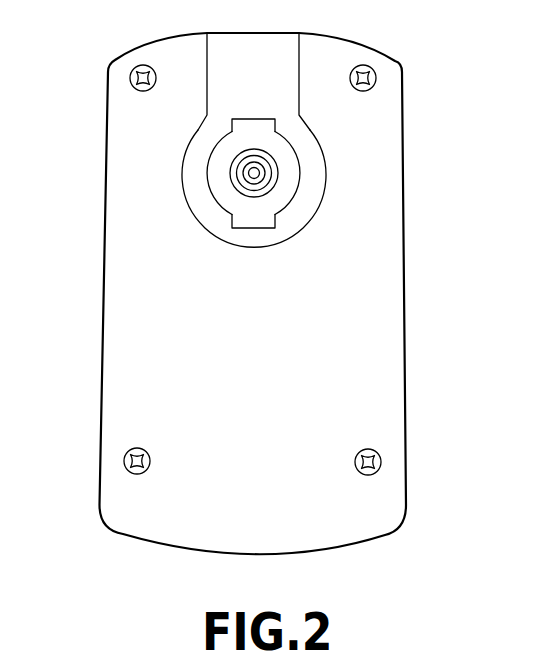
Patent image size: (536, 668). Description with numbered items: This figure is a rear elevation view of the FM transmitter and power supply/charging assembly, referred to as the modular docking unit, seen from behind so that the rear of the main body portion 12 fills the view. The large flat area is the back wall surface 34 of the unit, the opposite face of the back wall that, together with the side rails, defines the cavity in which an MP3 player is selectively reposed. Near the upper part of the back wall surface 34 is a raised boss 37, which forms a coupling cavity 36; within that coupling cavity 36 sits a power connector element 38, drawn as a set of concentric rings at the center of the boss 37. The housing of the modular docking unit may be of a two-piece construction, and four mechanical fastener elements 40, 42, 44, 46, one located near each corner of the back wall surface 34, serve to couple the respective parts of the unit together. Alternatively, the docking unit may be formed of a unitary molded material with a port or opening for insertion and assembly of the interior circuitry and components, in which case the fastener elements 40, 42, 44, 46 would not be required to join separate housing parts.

The main body portion 12 is at (404, 347).
The back wall surface 34 is at (267, 350).
The coupling cavity 36 is at (287, 193).
The boss 37 is at (205, 217).
The power connector element 38 is at (260, 170).
The mechanical fastener element 40 is at (141, 65).
The mechanical fastener element 42 is at (365, 65).
The mechanical fastener element 44 is at (380, 470).
The mechanical fastener element 46 is at (126, 455).